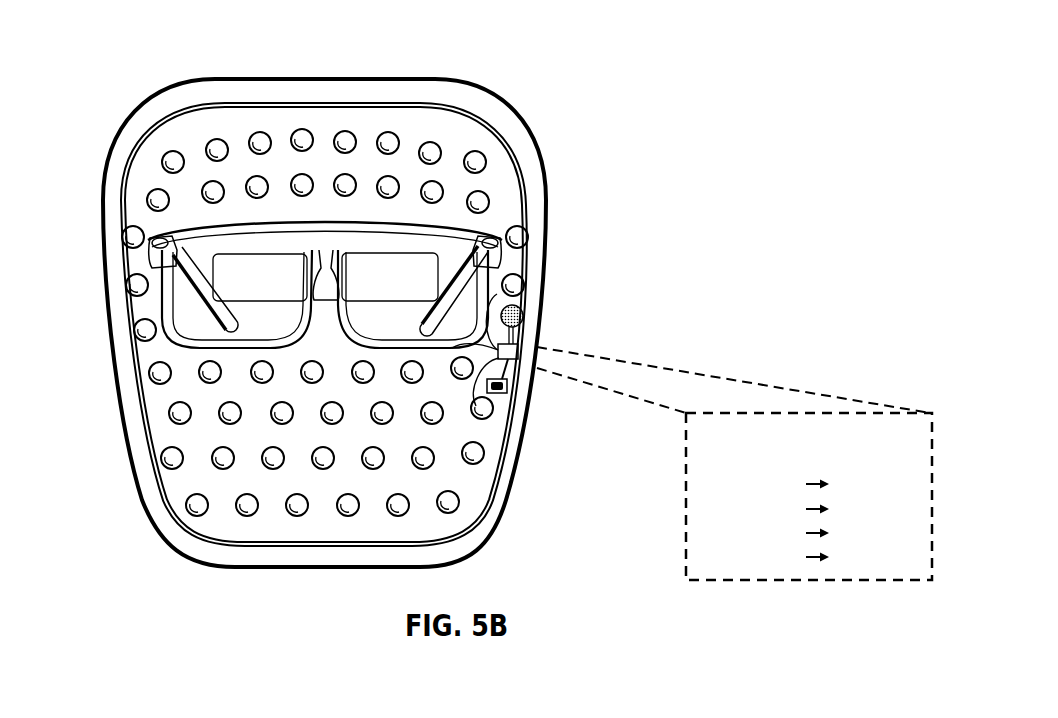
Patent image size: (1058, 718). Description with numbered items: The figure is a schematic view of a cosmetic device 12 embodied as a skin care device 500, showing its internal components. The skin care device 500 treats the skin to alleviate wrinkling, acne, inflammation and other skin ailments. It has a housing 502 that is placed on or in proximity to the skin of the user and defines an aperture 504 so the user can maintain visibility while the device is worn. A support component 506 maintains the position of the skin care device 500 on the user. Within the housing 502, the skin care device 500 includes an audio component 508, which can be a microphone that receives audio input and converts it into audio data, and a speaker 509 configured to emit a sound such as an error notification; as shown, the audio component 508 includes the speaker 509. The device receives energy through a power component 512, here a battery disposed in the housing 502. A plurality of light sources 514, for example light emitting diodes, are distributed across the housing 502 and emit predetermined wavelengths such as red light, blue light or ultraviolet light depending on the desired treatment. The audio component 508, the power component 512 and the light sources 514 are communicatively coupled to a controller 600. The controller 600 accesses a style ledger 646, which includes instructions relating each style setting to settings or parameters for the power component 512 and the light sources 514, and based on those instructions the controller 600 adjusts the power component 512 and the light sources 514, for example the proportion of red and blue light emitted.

The cosmetic device 12 is at (436, 292).
The skin care device 500 is at (436, 292).
The housing 502 is at (520, 105).
The aperture 504 is at (414, 291).
The support component 506 is at (382, 272).
The audio component 508 is at (581, 309).
The speaker 509 is at (522, 313).
The power component 512 is at (507, 386).
The light sources 514 is at (389, 140).
The controller 600 is at (518, 349).
The style ledger 646 is at (910, 448).